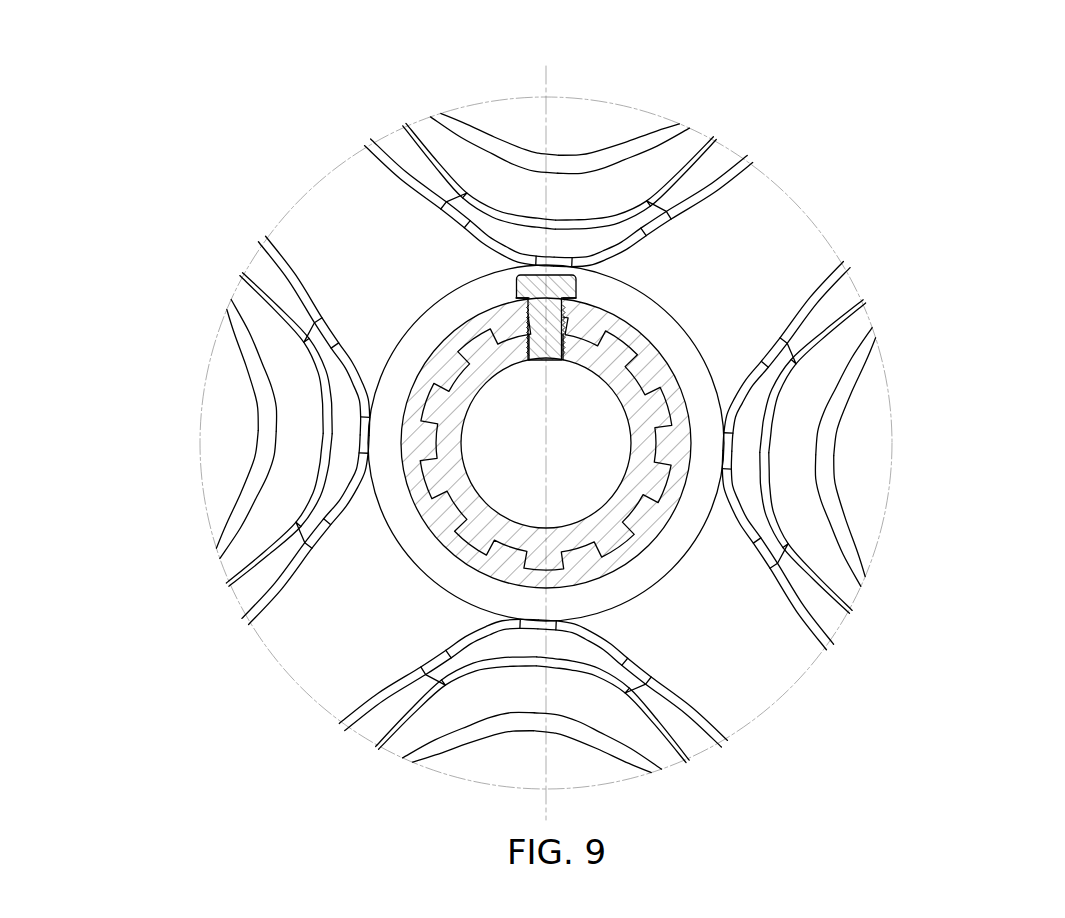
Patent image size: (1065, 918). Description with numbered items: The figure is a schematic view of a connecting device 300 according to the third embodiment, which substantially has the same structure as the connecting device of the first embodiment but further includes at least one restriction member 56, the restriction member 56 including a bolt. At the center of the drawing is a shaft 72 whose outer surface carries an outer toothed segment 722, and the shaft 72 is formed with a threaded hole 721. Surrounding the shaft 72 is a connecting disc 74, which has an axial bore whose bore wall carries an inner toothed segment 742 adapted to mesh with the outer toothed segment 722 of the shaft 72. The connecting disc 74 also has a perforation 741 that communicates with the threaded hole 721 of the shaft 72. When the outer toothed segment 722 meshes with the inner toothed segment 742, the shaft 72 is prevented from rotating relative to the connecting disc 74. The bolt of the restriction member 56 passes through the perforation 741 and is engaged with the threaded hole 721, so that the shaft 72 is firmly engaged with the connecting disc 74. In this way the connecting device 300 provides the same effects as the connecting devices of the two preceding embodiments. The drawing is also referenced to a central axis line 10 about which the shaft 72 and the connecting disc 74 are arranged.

The connecting device 300 is at (210, 196).
The central axis 10 is at (549, 75).
The connecting disc 74 is at (783, 251).
The inner toothed segment 742 is at (676, 407).
The shaft 72 is at (486, 422).
The outer toothed segment 722 is at (670, 482).
The threaded hole 721 is at (527, 347).
The perforation 741 is at (567, 303).
The restriction member 56 is at (534, 291).